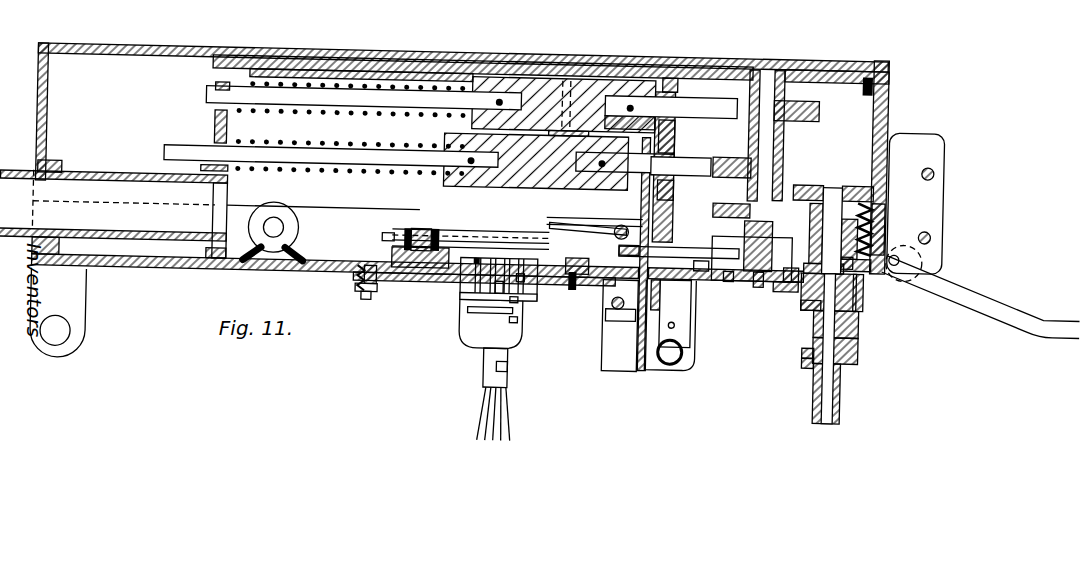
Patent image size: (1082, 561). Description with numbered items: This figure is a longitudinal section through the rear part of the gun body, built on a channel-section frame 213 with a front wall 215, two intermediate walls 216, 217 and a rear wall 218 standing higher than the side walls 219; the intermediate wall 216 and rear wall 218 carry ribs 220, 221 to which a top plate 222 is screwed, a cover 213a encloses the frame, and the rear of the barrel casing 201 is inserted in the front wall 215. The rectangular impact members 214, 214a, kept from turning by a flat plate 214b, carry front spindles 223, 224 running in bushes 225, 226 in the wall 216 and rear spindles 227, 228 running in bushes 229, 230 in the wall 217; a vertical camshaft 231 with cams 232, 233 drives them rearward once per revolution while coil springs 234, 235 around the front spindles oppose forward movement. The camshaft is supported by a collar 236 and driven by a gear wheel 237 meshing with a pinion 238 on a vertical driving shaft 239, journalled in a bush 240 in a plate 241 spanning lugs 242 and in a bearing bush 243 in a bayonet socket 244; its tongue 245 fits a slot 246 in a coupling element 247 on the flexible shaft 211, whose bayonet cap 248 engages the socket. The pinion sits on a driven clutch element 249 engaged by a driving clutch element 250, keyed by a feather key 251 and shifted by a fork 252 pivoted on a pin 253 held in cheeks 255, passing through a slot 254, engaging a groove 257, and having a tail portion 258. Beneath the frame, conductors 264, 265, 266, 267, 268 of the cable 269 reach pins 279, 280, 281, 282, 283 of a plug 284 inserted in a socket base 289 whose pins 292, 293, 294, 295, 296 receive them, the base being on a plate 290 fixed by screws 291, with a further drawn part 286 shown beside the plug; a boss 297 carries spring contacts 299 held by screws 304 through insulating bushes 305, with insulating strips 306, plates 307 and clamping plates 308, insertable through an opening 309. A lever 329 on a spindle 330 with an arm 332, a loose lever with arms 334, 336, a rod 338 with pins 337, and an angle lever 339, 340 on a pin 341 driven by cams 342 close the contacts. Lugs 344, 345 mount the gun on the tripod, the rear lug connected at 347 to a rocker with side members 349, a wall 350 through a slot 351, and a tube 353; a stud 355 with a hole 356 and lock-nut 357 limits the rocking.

The barrel casing 201 is at (13, 183).
The flexible shaft 211 is at (828, 383).
The channel-section frame 213 is at (275, 271).
The cover 213a is at (158, 47).
The impact member 214 is at (532, 80).
The impact member 214a is at (447, 137).
The flat plate 214b is at (578, 130).
The front wall 215 is at (53, 160).
The intermediate wall 216 is at (213, 124).
The intermediate wall 217 is at (665, 82).
The rear wall 218 is at (888, 95).
The side walls 219 is at (317, 214).
The rib 220 is at (237, 53).
The rib 221 is at (857, 80).
The top plate 222 is at (390, 60).
The spindle 223 is at (347, 92).
The spindle 224 is at (272, 152).
The bearing bush 225 is at (213, 85).
The bearing bush 226 is at (213, 144).
The spindle 227 is at (682, 102).
The spindle 228 is at (681, 162).
The bearing bush 229 is at (683, 118).
The bearing bush 230 is at (684, 186).
The vertical camshaft 231 is at (763, 72).
The cam 232 is at (788, 100).
The cam 233 is at (722, 158).
The coil spring 234 is at (427, 87).
The coil spring 235 is at (367, 143).
The collar 236 is at (802, 187).
The gear wheel 237 is at (729, 199).
The gear pinion 238 is at (858, 188).
The vertical driving shaft 239 is at (832, 203).
The bush 240 is at (830, 187).
The plate 241 is at (886, 165).
The lugs 242 is at (812, 187).
The bearing bush 243 is at (858, 297).
The bayonet socket 244 is at (815, 318).
The tongue 245 is at (860, 327).
The slot 246 is at (857, 343).
The coupling element 247 is at (813, 358).
The bayonet cap 248 is at (813, 348).
The driven clutch element 249 is at (858, 227).
The driving clutch element 250 is at (880, 233).
The feather key 251 is at (863, 282).
The shifting fork 252 is at (847, 262).
The pin 253 is at (903, 260).
The slot 254 is at (883, 243).
The cheeks 255 is at (937, 163).
The circumferential groove 257 is at (852, 258).
The tail portion 258 is at (992, 297).
The conductor 264 is at (480, 397).
The conductor 265 is at (483, 428).
The conductor 266 is at (507, 404).
The conductor 267 is at (507, 429).
The conductor 268 is at (483, 416).
The five-way cable 269 is at (490, 372).
The pin 279 is at (470, 306).
The pin 280 is at (499, 303).
The pin 281 is at (515, 311).
The pin 282 is at (505, 362).
The pin 283 is at (478, 309).
The five-pin plug 284 is at (465, 340).
The insulator 286 is at (478, 350).
The five-pin socket base 289 is at (473, 300).
The plate 290 is at (380, 297).
The screws 291 is at (367, 291).
The pin 292 is at (440, 282).
The pin 293 is at (500, 286).
The pin 294 is at (523, 270).
The pin 295 is at (517, 291).
The pin 296 is at (477, 292).
The rectangular boss 297 is at (397, 258).
The spring contacts 299 is at (497, 235).
The screws 304 is at (400, 227).
The insulating bushes 305 is at (422, 227).
The strips of insulating material 306 is at (458, 233).
The plates of insulating material 307 is at (383, 239).
The metal clamping plates 308 is at (402, 229).
The opening 309 is at (353, 283).
The lever 329 is at (688, 230).
The spindle 330 is at (618, 225).
The lever arm 332 is at (553, 223).
The arm 334 is at (580, 222).
The arm 336 is at (598, 285).
The pins 337 is at (618, 248).
The rod 338 is at (700, 262).
The arm of angle lever 339 is at (717, 237).
The lever arm 340 is at (797, 273).
The pin 341 is at (767, 272).
The cams 342 is at (793, 253).
The lug 344 is at (78, 286).
The rear lug 345 is at (612, 320).
The connection 347 is at (632, 309).
The side members 349 is at (622, 369).
The transverse wall 350 is at (652, 372).
The slot 351 is at (616, 305).
The tube 353 is at (687, 359).
The stud 355 is at (678, 332).
The hole 356 is at (676, 327).
The lock-nut 357 is at (653, 299).